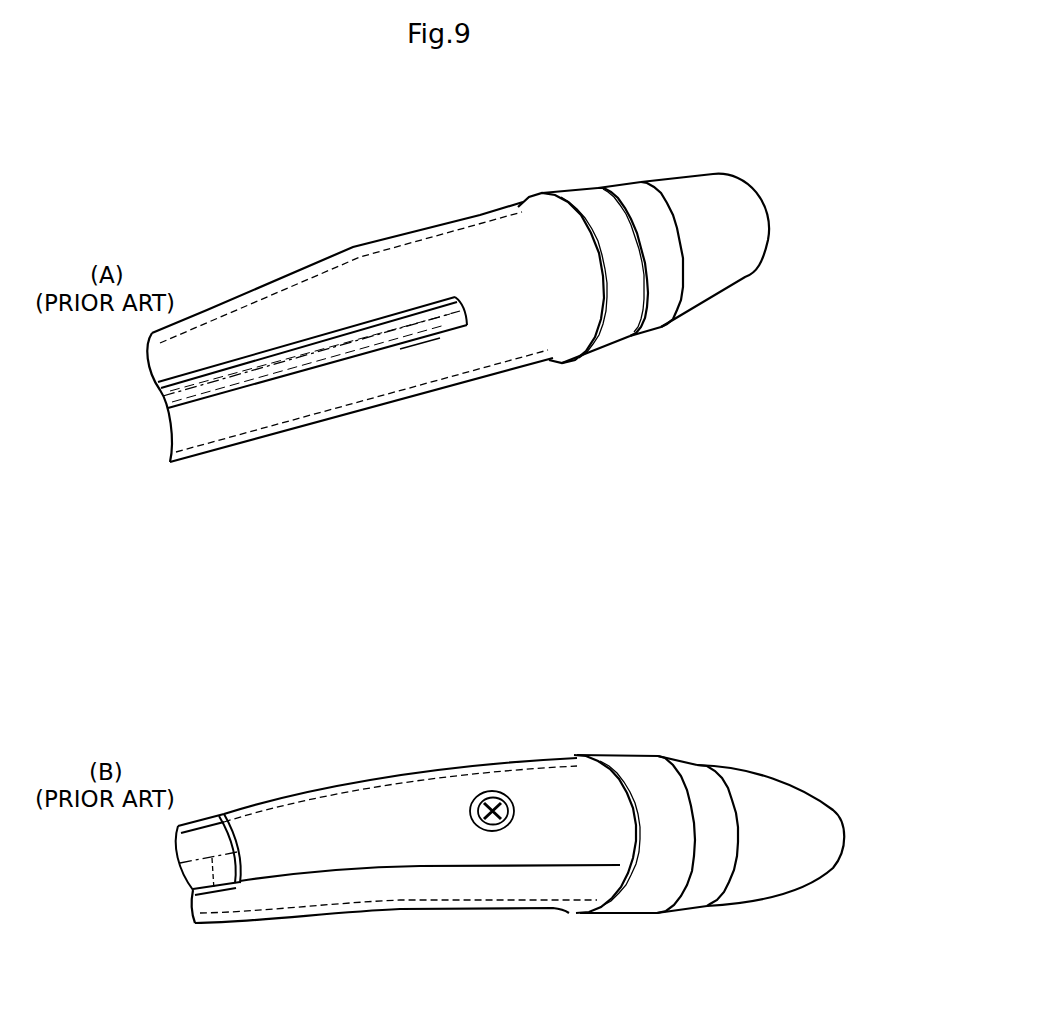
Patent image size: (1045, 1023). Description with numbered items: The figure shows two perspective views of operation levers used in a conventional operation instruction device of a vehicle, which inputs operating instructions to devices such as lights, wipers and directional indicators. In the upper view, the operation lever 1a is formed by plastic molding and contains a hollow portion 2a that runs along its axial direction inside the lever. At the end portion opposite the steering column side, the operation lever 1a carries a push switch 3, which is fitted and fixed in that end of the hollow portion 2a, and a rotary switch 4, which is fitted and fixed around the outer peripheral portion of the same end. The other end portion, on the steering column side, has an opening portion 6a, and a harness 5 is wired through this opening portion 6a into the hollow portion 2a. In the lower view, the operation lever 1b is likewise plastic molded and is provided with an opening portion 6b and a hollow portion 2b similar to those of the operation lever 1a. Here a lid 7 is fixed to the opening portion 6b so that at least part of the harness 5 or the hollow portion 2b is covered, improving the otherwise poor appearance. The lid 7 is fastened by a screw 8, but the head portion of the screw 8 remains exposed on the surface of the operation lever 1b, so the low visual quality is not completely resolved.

The operation lever 1a is at (458, 549).
The hollow portion 2a is at (478, 248).
The push switch 3 is at (706, 200).
The rotary switch 4 is at (581, 205).
The harness 5 is at (230, 383).
The opening portion 6a is at (408, 345).
The operation lever 1b is at (510, 839).
The hollow portion 2b is at (296, 865).
The opening portion 6b is at (203, 835).
The lid 7 is at (442, 798).
The screw 8 is at (492, 767).